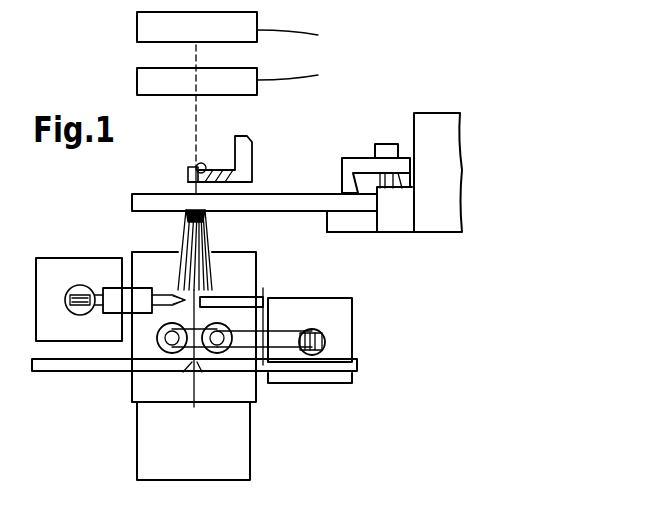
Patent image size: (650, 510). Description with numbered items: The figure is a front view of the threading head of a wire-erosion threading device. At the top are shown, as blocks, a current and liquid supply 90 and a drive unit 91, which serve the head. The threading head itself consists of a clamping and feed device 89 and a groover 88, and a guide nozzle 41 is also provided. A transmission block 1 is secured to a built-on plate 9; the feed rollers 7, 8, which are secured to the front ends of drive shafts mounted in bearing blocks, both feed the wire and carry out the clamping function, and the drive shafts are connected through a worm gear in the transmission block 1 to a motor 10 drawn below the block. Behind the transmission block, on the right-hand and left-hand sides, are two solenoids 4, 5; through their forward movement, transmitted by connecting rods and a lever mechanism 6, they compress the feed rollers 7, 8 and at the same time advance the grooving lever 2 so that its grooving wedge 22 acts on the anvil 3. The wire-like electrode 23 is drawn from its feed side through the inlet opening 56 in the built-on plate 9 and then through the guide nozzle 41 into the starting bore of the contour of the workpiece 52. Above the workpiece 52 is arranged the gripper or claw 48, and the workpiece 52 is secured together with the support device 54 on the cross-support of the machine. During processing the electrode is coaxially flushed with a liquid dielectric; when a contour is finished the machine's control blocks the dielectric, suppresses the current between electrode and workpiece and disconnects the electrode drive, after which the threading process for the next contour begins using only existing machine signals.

The transmission block 1 is at (165, 257).
The grooving lever 2 is at (113, 307).
The anvil 3 is at (227, 302).
The solenoid 4 is at (47, 285).
The solenoid 5 is at (342, 323).
The lever mechanism 6 is at (283, 331).
The feed roller 7 is at (163, 342).
The feed roller 8 is at (218, 352).
The built-on plate 9 is at (47, 367).
The motor 10 is at (238, 457).
The grooving wedge 22 is at (190, 300).
The wire-like electrode 23 is at (188, 396).
The guide nozzle 41 is at (198, 233).
The gripper or claw 48 is at (188, 172).
The workpiece 52 is at (263, 199).
The support device 54 is at (353, 165).
The inlet opening 56 is at (185, 370).
The groover 88 is at (125, 297).
The clamping and feed device 89 is at (229, 352).
The current and liquid supply 90 is at (138, 25).
The drive unit 91 is at (138, 80).